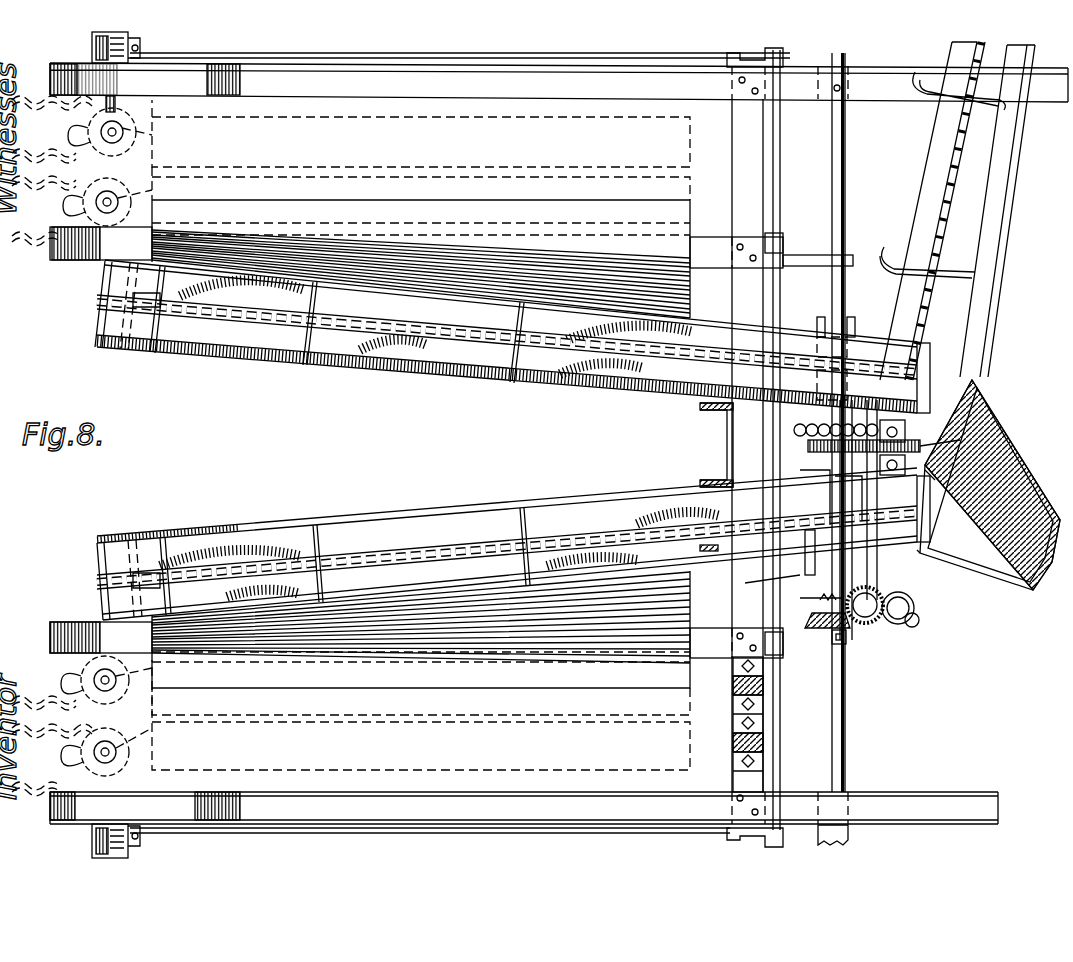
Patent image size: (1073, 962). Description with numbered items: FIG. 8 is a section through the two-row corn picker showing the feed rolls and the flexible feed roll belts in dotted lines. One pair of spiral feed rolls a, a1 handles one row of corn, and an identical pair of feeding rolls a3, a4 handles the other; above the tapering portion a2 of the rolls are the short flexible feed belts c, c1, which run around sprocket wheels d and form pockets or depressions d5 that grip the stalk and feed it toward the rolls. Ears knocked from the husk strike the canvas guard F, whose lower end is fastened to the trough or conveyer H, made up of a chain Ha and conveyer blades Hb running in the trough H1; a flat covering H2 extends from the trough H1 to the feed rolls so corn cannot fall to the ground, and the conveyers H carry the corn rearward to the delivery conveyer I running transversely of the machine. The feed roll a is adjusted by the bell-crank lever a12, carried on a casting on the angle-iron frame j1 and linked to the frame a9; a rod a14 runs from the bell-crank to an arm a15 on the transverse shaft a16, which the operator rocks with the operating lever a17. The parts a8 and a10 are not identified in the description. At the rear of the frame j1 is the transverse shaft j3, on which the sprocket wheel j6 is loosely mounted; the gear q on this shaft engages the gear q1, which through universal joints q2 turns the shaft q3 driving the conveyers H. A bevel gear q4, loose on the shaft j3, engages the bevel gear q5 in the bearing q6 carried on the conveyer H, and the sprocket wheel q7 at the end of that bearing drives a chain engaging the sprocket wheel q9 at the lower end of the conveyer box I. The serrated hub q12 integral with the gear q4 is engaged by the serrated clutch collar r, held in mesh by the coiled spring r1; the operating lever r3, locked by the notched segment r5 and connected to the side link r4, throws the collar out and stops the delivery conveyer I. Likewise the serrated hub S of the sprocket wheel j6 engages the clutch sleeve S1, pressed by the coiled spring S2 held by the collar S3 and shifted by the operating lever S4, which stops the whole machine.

The feed roll a is at (421, 717).
The feed roll a1 is at (421, 701).
The tapering portion a2 is at (148, 740).
The feeding roll a3 is at (421, 133).
The feeding roll a4 is at (342, 175).
The top rail beam a8 is at (70, 833).
The frame a9 is at (153, 439).
The clamp a10 is at (100, 86).
The bell-crank lever a12 is at (135, 815).
The rod a14 is at (460, 445).
The arm a15 is at (712, 850).
The transverse shaft a16 is at (785, 255).
The operating lever a17 is at (840, 258).
The flexible feed belt c is at (40, 738).
The flexible feed belt c1 is at (40, 645).
The sprocket wheel d is at (141, 441).
The pockets or depressions d5 is at (40, 250).
The canvas guard F is at (338, 368).
The trough or conveyer H is at (448, 378).
The trough H1 is at (385, 300).
The flat covering H2 is at (400, 222).
The chain Ha is at (470, 545).
The conveyer blades Hb is at (720, 395).
The delivery conveyer I is at (975, 340).
The angle-iron frame j1 is at (340, 75).
The shaft j3 is at (848, 725).
The sprocket wheel j6 is at (800, 432).
The gear q is at (808, 448).
The gear q1 is at (905, 465).
The universal joints q2 is at (905, 445).
The shaft q3 is at (920, 440).
The bevel gear q4 is at (846, 640).
The bevel gear q5 is at (885, 590).
The bearing q6 is at (916, 600).
The sprocket wheel q7 is at (920, 624).
The sprocket wheel q9 is at (890, 420).
The serrated hub q12 is at (830, 636).
The clutch collar r is at (814, 601).
The coiled spring r1 is at (840, 552).
The operating lever r3 is at (825, 495).
The side link r4 is at (745, 583).
The notched segment r5 is at (847, 498).
The serrated hub S is at (830, 421).
The clutch sleeve S1 is at (812, 385).
The coiled spring S2 is at (812, 351).
The collar S3 is at (815, 328).
The operating lever S4 is at (830, 320).